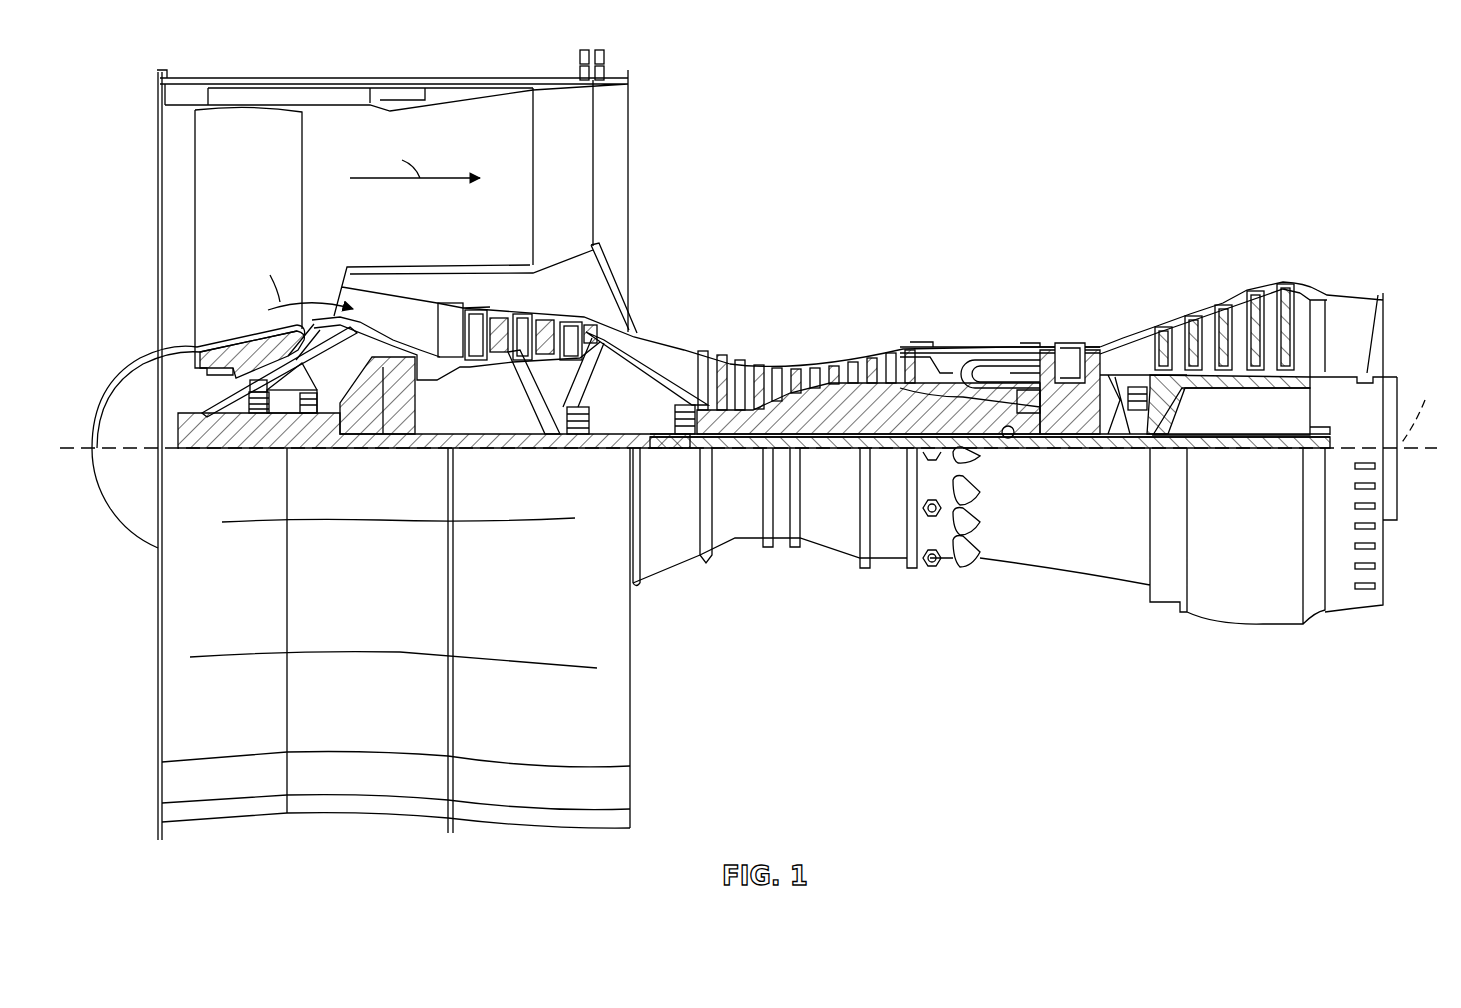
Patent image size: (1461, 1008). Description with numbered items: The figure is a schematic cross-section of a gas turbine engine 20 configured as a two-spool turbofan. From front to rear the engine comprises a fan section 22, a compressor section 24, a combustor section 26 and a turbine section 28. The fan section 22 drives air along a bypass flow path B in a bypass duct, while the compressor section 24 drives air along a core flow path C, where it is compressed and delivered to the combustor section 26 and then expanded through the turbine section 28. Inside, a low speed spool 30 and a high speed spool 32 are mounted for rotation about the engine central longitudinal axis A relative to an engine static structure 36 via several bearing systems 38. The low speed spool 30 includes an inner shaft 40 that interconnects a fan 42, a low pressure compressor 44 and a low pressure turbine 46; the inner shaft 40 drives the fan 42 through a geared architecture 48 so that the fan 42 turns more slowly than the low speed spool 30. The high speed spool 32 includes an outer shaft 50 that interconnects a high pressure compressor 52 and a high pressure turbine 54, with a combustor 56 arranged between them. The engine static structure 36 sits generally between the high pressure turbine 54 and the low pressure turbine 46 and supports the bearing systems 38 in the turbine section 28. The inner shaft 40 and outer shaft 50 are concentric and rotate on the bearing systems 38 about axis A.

The gas turbine engine 20 is at (748, 439).
The fan section 22 is at (312, 66).
The compressor section 24 is at (820, 305).
The combustor section 26 is at (997, 313).
The turbine section 28 is at (1248, 334).
The low speed spool 30 is at (852, 452).
The high speed spool 32 is at (905, 400).
The engine static structure 36 is at (895, 567).
The bearing systems 38 is at (262, 415).
The inner shaft 40 is at (646, 452).
The fan 42 is at (393, 470).
The low pressure compressor 44 is at (548, 318).
The low pressure turbine 46 is at (1235, 300).
The geared architecture 48 is at (398, 415).
The outer shaft 50 is at (1016, 435).
The high pressure compressor 52 is at (810, 395).
The high pressure turbine 54 is at (1072, 345).
The combustor 56 is at (996, 372).